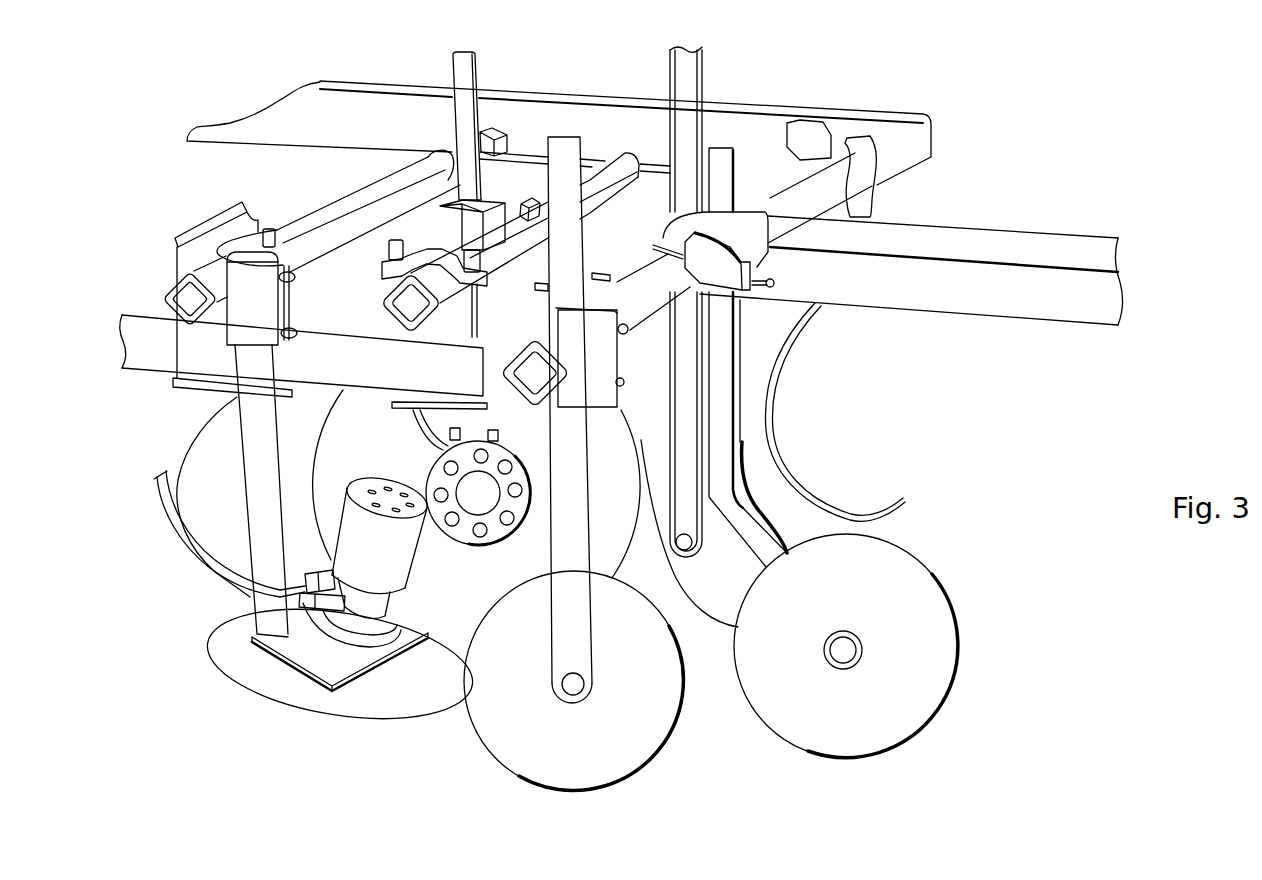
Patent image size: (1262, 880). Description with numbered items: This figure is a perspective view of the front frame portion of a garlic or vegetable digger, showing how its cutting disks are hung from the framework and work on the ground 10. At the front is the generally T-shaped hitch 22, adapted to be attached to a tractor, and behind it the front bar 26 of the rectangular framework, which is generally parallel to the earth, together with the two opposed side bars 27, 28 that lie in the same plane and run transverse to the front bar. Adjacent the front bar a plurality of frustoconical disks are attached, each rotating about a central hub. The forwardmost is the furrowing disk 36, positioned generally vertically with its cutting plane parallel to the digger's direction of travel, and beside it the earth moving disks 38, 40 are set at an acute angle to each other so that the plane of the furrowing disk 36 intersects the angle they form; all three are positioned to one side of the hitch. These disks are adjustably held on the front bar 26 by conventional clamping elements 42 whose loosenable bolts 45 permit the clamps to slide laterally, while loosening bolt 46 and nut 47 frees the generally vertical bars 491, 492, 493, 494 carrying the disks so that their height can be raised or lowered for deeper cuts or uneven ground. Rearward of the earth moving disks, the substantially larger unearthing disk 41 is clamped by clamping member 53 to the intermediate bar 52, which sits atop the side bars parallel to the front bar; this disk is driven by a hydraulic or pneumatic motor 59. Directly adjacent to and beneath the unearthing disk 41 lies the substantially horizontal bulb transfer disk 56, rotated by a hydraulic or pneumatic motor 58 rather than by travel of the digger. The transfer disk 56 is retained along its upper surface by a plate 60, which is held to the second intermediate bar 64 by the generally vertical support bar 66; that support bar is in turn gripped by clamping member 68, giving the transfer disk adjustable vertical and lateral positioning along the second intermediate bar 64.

The ground 10 is at (951, 768).
The T-shaped hitch 22 is at (1030, 302).
The front bar 26 is at (778, 200).
The side bar 27 is at (628, 118).
The side bar 28 is at (312, 352).
The furrowing disk 36 is at (930, 617).
The earth moving disk 38 is at (655, 738).
The earth moving disk 40 is at (722, 590).
The unearthing disk 41 is at (613, 537).
The clamping element 42 is at (602, 362).
The bolt 45 is at (517, 312).
The bolt 46 is at (626, 326).
The nut 47 is at (621, 384).
The intermediate bar 52 is at (590, 193).
The clamping member 53 is at (527, 203).
The bulb transfer disk 56 is at (407, 700).
The hydraulic or pneumatic motor 58 is at (350, 517).
The hydraulic or pneumatic motor 59 is at (483, 495).
The plate 60 is at (333, 663).
The second intermediate bar 64 is at (355, 213).
The support bar 66 is at (260, 543).
The clamping member 68 is at (268, 335).
The vertical bar 491 is at (573, 437).
The vertical bar 492 is at (720, 350).
The vertical bar 493 is at (673, 196).
The vertical bar 494 is at (472, 112).